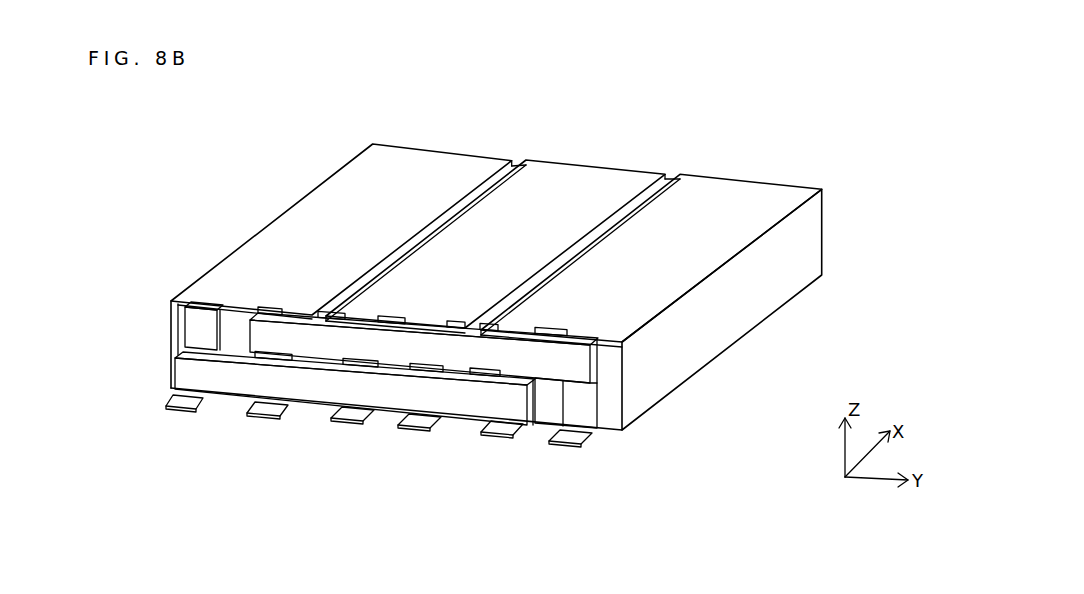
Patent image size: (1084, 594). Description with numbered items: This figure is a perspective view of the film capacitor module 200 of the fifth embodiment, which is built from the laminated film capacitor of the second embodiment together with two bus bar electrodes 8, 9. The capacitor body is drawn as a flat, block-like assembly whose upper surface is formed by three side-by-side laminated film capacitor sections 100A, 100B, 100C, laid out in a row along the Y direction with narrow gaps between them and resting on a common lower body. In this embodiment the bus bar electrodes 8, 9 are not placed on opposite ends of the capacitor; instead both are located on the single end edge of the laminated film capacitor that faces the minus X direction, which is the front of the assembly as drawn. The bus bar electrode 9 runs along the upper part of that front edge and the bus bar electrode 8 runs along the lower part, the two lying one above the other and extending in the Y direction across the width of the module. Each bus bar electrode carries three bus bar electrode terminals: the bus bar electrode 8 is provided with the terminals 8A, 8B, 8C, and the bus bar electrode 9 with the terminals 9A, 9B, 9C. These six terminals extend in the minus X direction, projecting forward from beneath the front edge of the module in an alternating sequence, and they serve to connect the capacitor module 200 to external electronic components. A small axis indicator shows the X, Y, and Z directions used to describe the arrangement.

The capacitor module 200 is at (886, 84).
The laminated film capacitor 100A is at (341, 199).
The laminated film capacitor 100B is at (495, 211).
The laminated film capacitor 100C is at (651, 226).
The bus bar electrode 8 is at (336, 383).
The bus bar electrode 9 is at (424, 338).
The bus bar electrode terminal 8A is at (177, 426).
The bus bar electrode terminal 9A is at (256, 431).
The bus bar electrode terminal 8B is at (342, 437).
The bus bar electrode terminal 9B is at (410, 443).
The bus bar electrode terminal 8C is at (492, 452).
The bus bar electrode terminal 9C is at (561, 461).